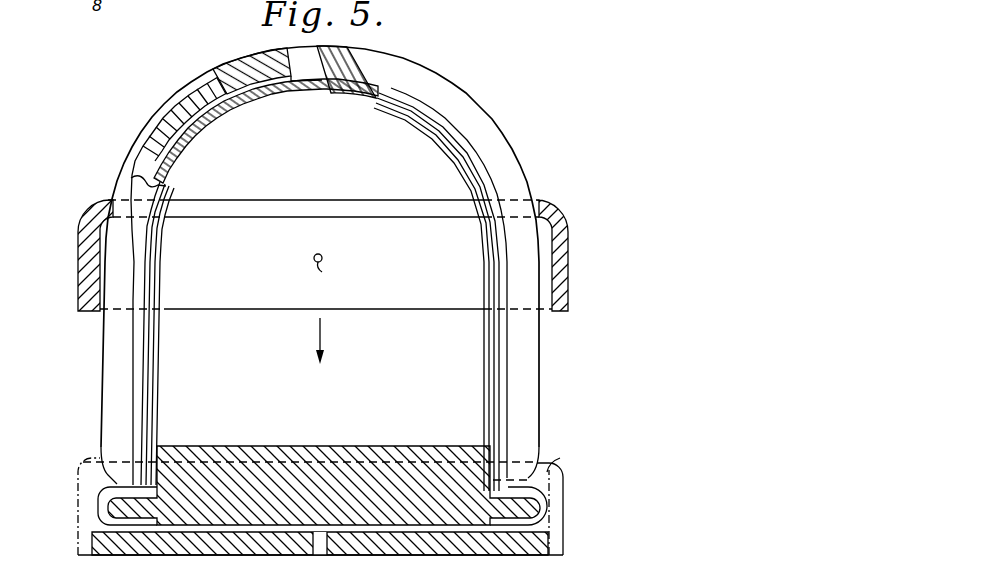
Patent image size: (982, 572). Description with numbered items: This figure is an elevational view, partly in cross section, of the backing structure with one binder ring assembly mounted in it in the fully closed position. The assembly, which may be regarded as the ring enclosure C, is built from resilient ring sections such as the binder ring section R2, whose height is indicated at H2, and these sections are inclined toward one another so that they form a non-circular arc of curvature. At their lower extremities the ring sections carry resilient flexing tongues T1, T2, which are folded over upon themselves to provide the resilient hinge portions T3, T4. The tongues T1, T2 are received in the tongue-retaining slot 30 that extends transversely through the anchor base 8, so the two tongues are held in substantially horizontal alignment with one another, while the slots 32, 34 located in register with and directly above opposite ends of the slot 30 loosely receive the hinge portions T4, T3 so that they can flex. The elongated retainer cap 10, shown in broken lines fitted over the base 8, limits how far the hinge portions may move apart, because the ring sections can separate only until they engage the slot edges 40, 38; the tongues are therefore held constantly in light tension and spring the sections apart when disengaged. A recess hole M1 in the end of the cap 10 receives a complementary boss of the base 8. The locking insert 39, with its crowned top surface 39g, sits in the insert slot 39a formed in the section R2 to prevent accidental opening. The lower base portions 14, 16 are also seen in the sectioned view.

The anchor base 8 is at (377, 473).
The retainer cap 10 is at (78, 269).
The base plate 14 is at (92, 532).
The base 16 is at (547, 527).
The tongue-retaining slot 30 is at (248, 524).
The tongue-retaining slot 32 is at (500, 497).
The tongue-retaining slot 34 is at (157, 462).
The slot edge 38 is at (560, 458).
The locking insert 39 is at (176, 122).
The insert slot 39a is at (154, 168).
The crowned top surface 39g is at (238, 70).
The slot edge 40 is at (83, 465).
The loop C is at (320, 265).
The loop height H2 is at (505, 178).
The binder ring section R2 is at (118, 335).
The recess hole M1 is at (332, 309).
The flexing tongue T1 is at (177, 530).
The flexing tongue T2 is at (457, 530).
The resilient hinge portion T3 is at (128, 492).
The resilient hinge portion T4 is at (517, 490).